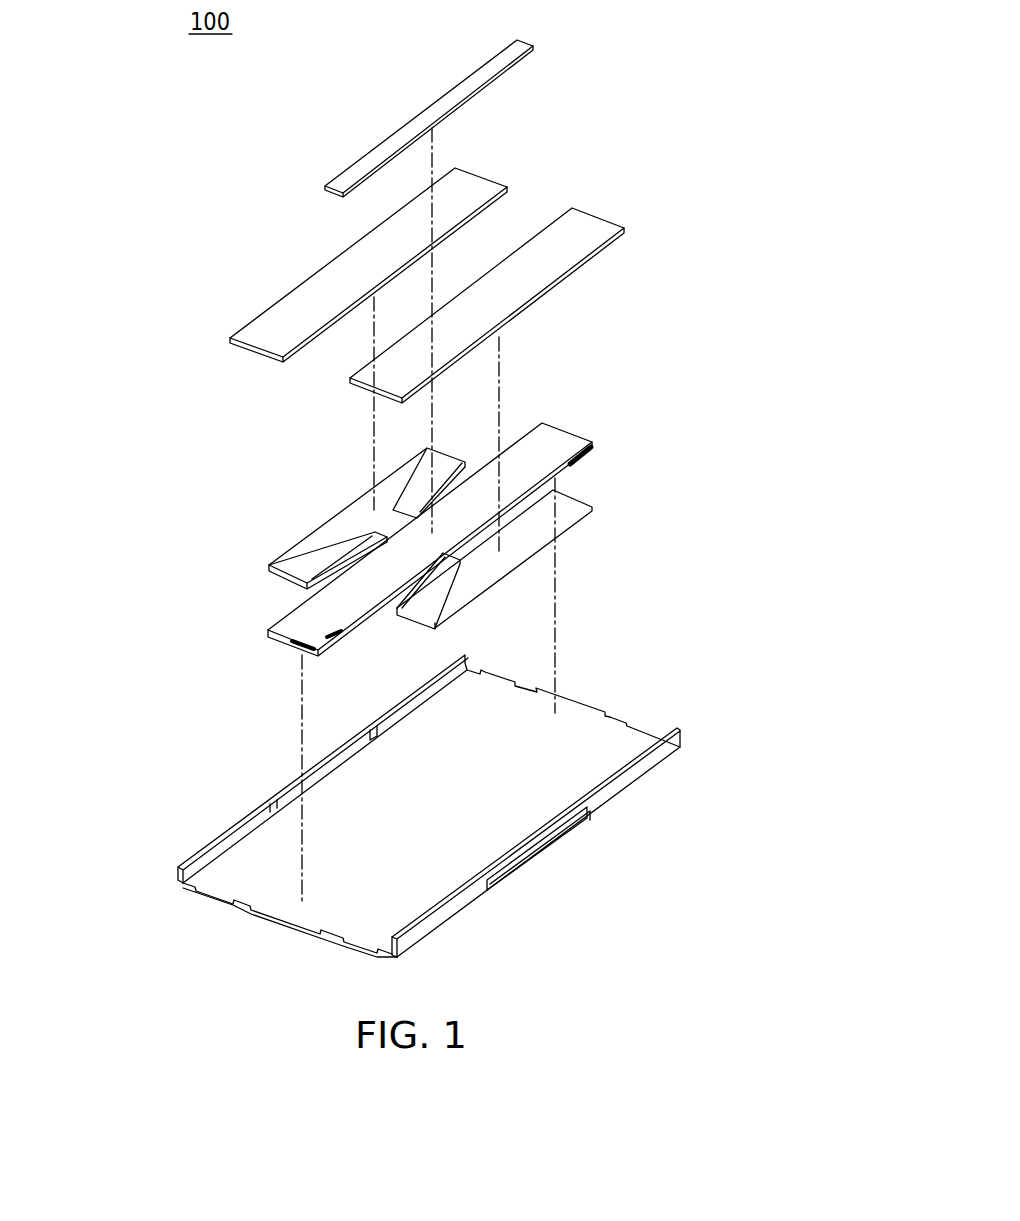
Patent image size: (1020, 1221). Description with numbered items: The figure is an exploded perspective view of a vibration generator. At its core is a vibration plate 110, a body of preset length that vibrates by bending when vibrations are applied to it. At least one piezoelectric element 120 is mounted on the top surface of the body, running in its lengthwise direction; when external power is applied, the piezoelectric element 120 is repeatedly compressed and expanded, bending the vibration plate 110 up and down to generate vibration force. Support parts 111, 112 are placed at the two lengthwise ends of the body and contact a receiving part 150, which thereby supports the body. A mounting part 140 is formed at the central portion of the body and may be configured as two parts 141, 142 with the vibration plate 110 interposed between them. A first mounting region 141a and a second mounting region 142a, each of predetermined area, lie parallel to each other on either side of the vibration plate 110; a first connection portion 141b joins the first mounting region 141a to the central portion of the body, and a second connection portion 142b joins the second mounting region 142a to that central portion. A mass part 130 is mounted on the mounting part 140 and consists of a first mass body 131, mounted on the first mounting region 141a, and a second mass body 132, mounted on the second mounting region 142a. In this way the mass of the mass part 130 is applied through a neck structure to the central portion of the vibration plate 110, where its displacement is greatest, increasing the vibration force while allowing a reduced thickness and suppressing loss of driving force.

The vibration plate 110 is at (440, 545).
The support part 111 is at (317, 657).
The support part 112 is at (588, 453).
The piezoelectric element 120 is at (510, 72).
The mass part 130 is at (519, 276).
The first mass body 131 is at (483, 185).
The second mass body 132 is at (602, 223).
The mounting part 140 is at (312, 553).
The first mounting part 141 is at (281, 518).
The first mounting region 141a is at (299, 558).
The first connection portion 141b is at (383, 535).
The second mounting part 142 is at (343, 574).
The second mounting region 142a is at (397, 608).
The second connection portion 142b is at (458, 552).
The receiving part 150 is at (603, 793).